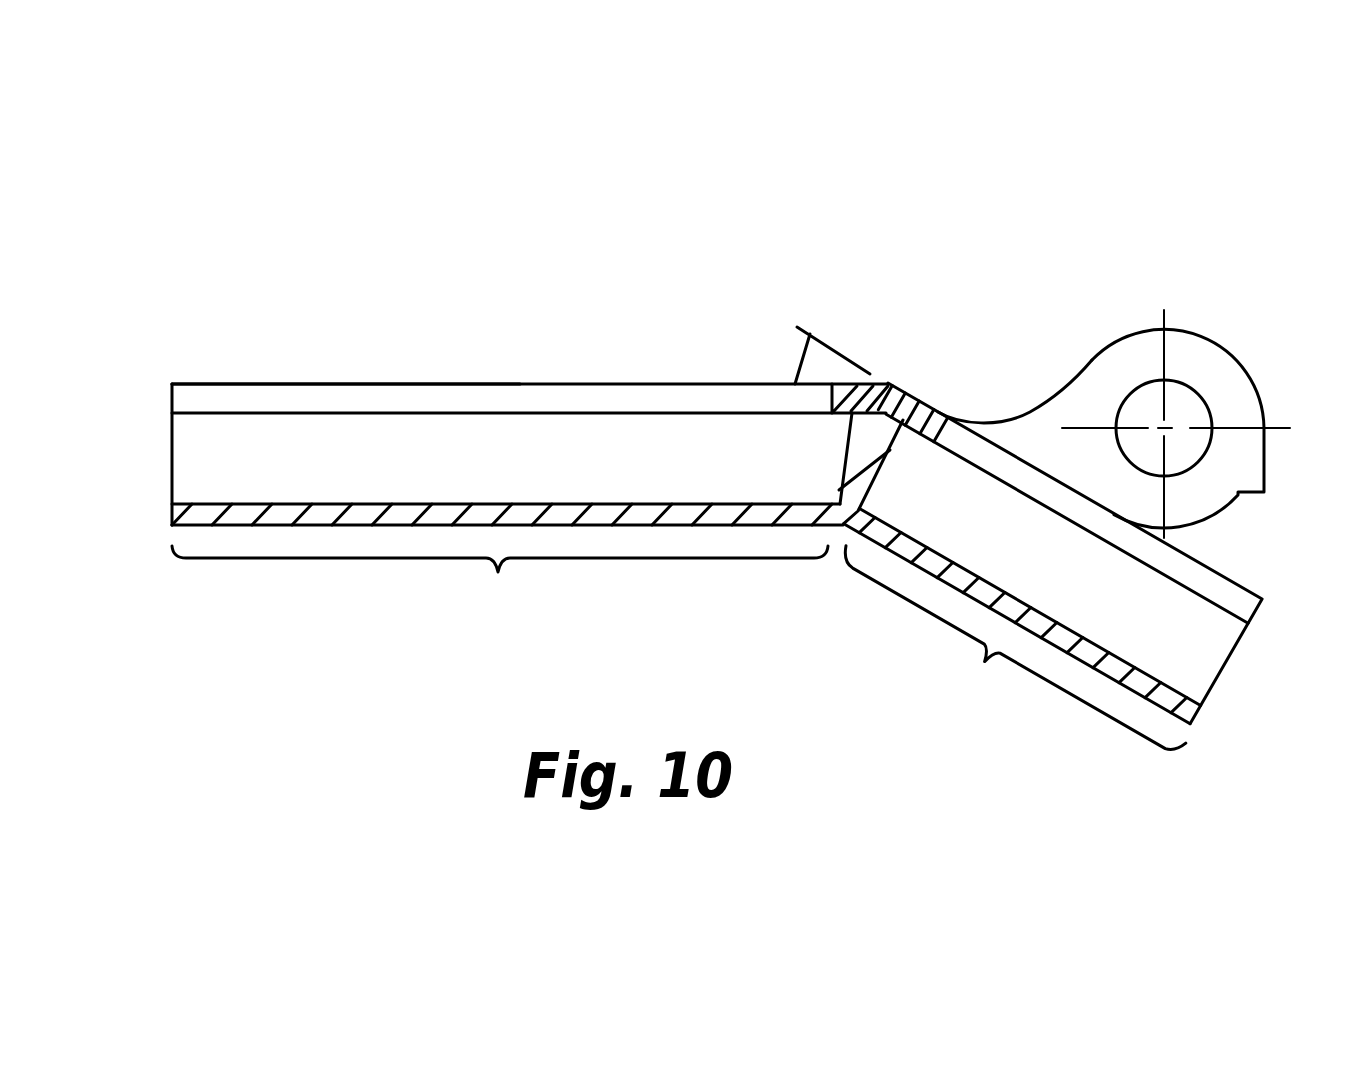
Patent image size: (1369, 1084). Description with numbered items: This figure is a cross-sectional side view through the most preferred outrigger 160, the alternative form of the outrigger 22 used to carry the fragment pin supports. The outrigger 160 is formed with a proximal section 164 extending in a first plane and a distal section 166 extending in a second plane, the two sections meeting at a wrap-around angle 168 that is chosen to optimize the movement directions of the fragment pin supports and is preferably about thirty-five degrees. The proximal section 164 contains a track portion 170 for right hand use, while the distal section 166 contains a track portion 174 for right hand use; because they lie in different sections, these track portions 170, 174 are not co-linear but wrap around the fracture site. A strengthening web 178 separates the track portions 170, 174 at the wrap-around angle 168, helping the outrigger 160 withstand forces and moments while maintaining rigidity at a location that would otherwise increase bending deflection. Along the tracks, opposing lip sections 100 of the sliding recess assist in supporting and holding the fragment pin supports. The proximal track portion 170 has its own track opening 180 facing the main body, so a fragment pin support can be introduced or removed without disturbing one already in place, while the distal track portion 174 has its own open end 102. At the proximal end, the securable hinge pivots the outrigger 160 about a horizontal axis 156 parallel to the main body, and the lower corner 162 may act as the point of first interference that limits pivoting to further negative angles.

The outrigger 22 is at (299, 312).
The lip section 100 is at (218, 390).
The open end 102 is at (172, 440).
The outrigger 160 is at (512, 385).
The track portion 174 is at (540, 428).
The distal section 166 is at (502, 564).
The wrap-around angle 168 is at (794, 362).
The strengthening web 178 is at (878, 453).
The lower corner 162 is at (1261, 599).
The track portion 170 is at (966, 493).
The track opening 180 is at (1229, 655).
The proximal section 164 is at (1016, 634).
The horizontal axis 156 is at (1167, 425).